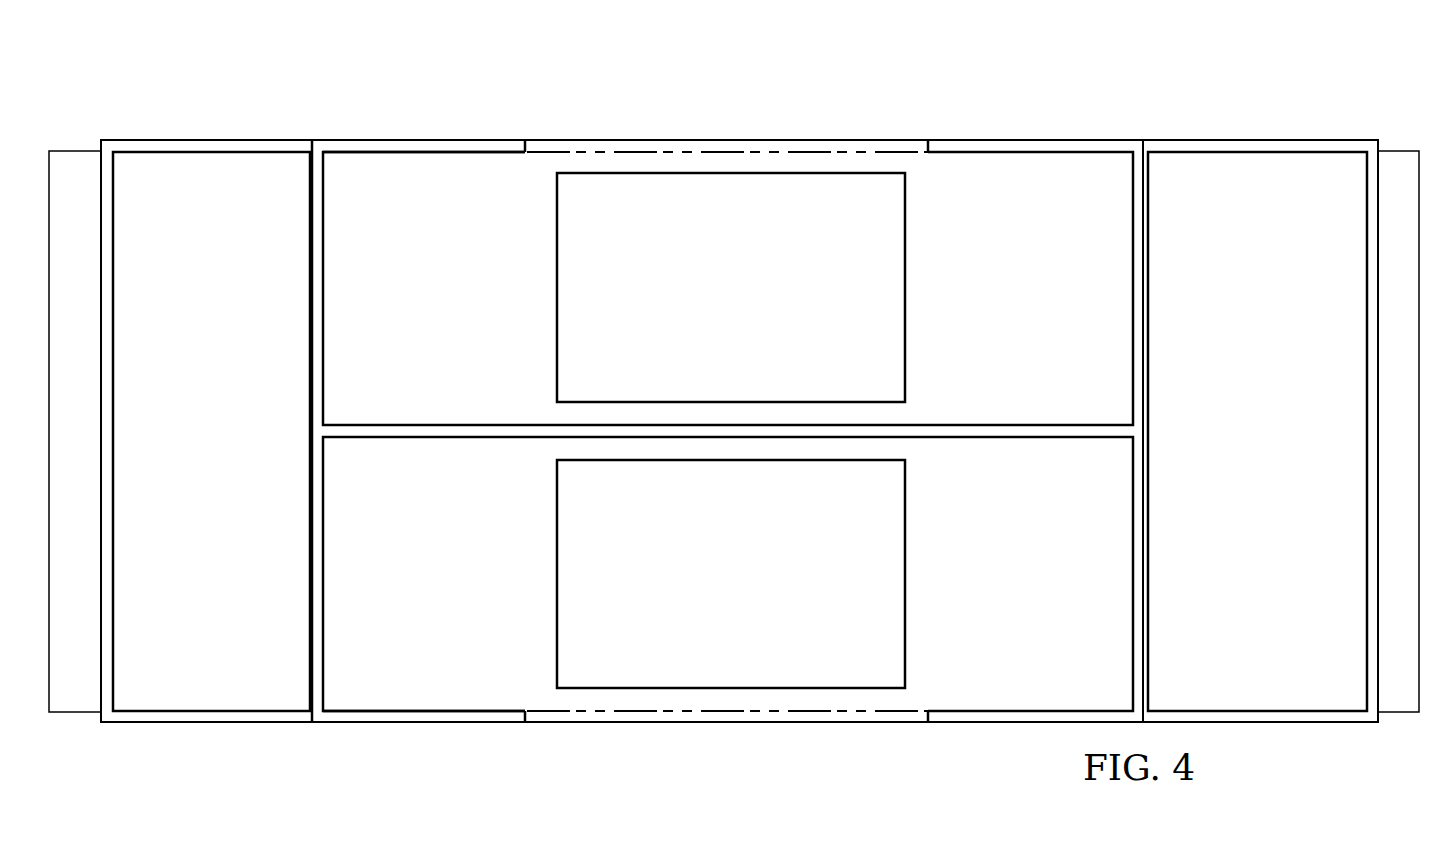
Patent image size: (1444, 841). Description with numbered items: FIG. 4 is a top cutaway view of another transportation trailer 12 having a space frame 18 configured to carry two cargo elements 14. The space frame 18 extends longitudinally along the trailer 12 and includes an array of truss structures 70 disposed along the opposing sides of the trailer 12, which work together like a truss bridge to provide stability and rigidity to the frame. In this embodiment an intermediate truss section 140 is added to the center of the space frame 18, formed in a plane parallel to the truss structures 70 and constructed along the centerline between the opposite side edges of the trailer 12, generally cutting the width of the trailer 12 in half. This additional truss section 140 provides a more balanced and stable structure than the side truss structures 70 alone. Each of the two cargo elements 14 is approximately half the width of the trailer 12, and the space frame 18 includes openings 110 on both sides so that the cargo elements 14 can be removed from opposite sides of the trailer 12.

The transportation trailer 12 is at (227, 91).
The cargo element 14 is at (748, 304).
The space frame 18 is at (1262, 140).
The truss structures 70 is at (417, 139).
The opening 110 is at (853, 116).
The intermediate truss section 140 is at (417, 438).